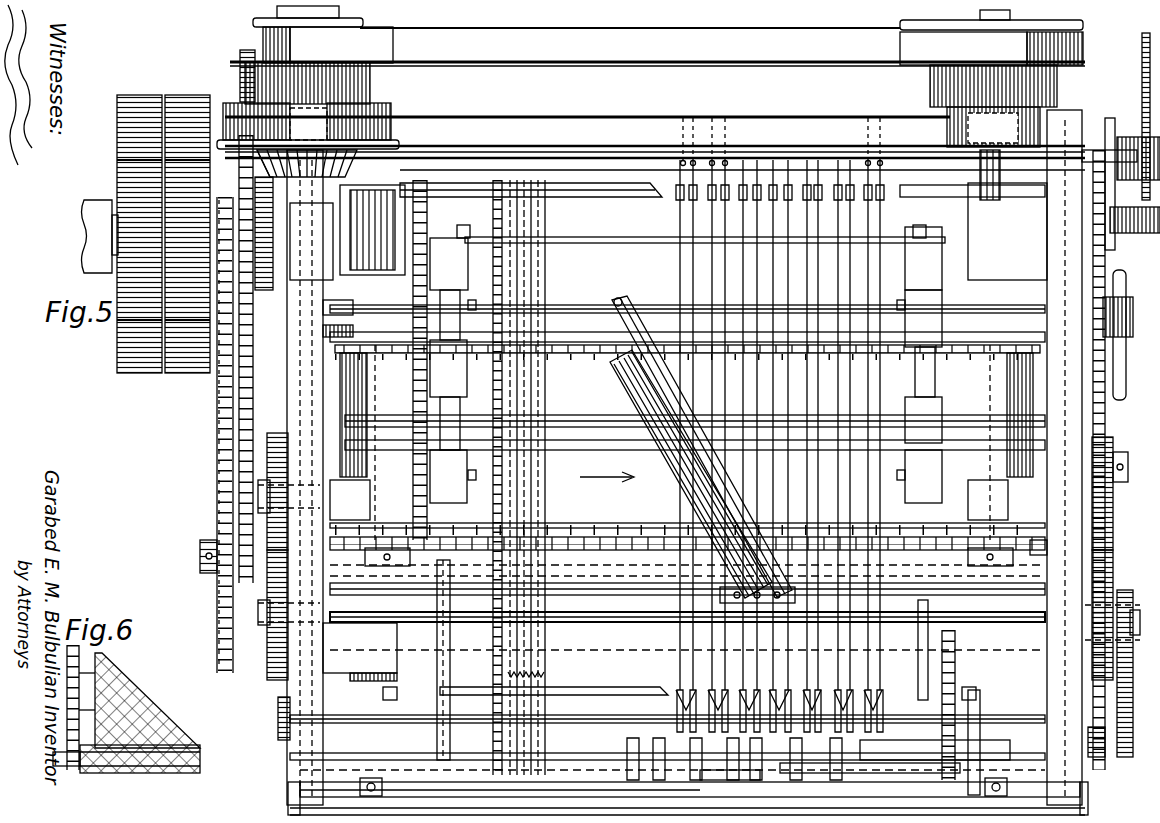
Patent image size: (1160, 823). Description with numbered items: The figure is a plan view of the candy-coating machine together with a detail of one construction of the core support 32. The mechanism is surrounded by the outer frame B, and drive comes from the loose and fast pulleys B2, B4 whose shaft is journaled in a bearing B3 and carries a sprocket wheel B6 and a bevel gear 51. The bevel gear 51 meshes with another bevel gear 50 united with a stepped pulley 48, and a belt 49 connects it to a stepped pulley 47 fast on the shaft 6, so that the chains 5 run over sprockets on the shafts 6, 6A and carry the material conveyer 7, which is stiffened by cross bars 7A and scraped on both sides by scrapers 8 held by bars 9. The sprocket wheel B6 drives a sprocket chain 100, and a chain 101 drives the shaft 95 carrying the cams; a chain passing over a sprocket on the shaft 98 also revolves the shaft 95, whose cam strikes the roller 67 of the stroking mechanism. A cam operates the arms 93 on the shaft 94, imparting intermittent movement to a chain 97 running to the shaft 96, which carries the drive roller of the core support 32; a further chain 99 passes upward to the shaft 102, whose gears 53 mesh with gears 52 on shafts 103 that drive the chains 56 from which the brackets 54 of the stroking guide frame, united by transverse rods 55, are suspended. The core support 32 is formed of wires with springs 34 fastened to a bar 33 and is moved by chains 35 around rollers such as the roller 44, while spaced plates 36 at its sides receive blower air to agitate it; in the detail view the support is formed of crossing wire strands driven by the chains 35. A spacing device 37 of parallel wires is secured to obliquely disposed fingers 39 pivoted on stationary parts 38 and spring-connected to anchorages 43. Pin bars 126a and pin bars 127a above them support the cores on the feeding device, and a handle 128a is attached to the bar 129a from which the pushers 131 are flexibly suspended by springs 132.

In FIG. 5, the chains 5 is at (1022, 347).
In FIG. 5, the shaft 6 is at (990, 190).
In FIG. 5, the shaft 6A is at (360, 310).
In FIG. 5, the material conveyer 7 is at (338, 383).
In FIG. 5, the cross bars 7A is at (760, 360).
In FIG. 5, the scrapers 8 is at (622, 375).
In FIG. 5, the bars 9 is at (722, 505).
In FIG. 5, the core support 32 is at (538, 652).
In FIG. 6, the core support 32 is at (148, 692).
In FIG. 5, the bar 33 is at (625, 686).
In FIG. 5, the springs 34 is at (545, 676).
In FIG. 5, the chains 35 is at (980, 695).
In FIG. 6, the chains 35 is at (68, 772).
In FIG. 5, the spaced plates 36 is at (492, 408).
In FIG. 5, the spacing device 37 is at (880, 690).
In FIG. 5, the stationary parts 38 is at (872, 117).
In FIG. 5, the fingers 39 is at (683, 688).
In FIG. 5, the anchorages 43 is at (730, 160).
In FIG. 5, the roller 44 is at (635, 196).
In FIG. 5, the stepped pulley 47 is at (1085, 45).
In FIG. 5, the stepped pulley 48 is at (395, 105).
In FIG. 5, the belt 49 is at (740, 64).
In FIG. 5, the bevel gear 50 is at (392, 150).
In FIG. 5, the bevel gear 51 is at (250, 182).
In FIG. 5, the gears 52 is at (288, 458).
In FIG. 5, the gears 53 is at (288, 655).
In FIG. 5, the brackets 54 is at (466, 228).
In FIG. 5, the transverse rods 55 is at (566, 445).
In FIG. 5, the chains 56 is at (376, 432).
In FIG. 5, the roller 67 is at (1130, 232).
In FIG. 5, the arms 93 is at (1126, 300).
In FIG. 5, the shaft 94 is at (1133, 322).
In FIG. 5, the shaft 95 is at (1143, 130).
In FIG. 5, the shaft 96 is at (278, 716).
In FIG. 5, the chain 97 is at (1106, 420).
In FIG. 5, the shaft 98 is at (200, 553).
In FIG. 5, the chain 99 is at (1133, 705).
In FIG. 5, the sprocket chain 100 is at (217, 420).
In FIG. 5, the chain 101 is at (274, 609).
In FIG. 5, the shaft 102 is at (1122, 636).
In FIG. 5, the shafts 103 is at (258, 496).
In FIG. 5, the pin bars 126a is at (648, 708).
In FIG. 5, the pin bars 127a is at (645, 741).
In FIG. 5, the handle 128a is at (371, 783).
In FIG. 5, the bar 129a is at (500, 790).
In FIG. 5, the pushers 131 is at (800, 770).
In FIG. 5, the springs 132 is at (748, 785).
In FIG. 5, the outer frame B is at (1070, 112).
In FIG. 5, the pulley B2 is at (142, 94).
In FIG. 5, the bearing B3 is at (95, 199).
In FIG. 5, the pulley B4 is at (187, 94).
In FIG. 5, the sprocket wheel B6 is at (223, 422).